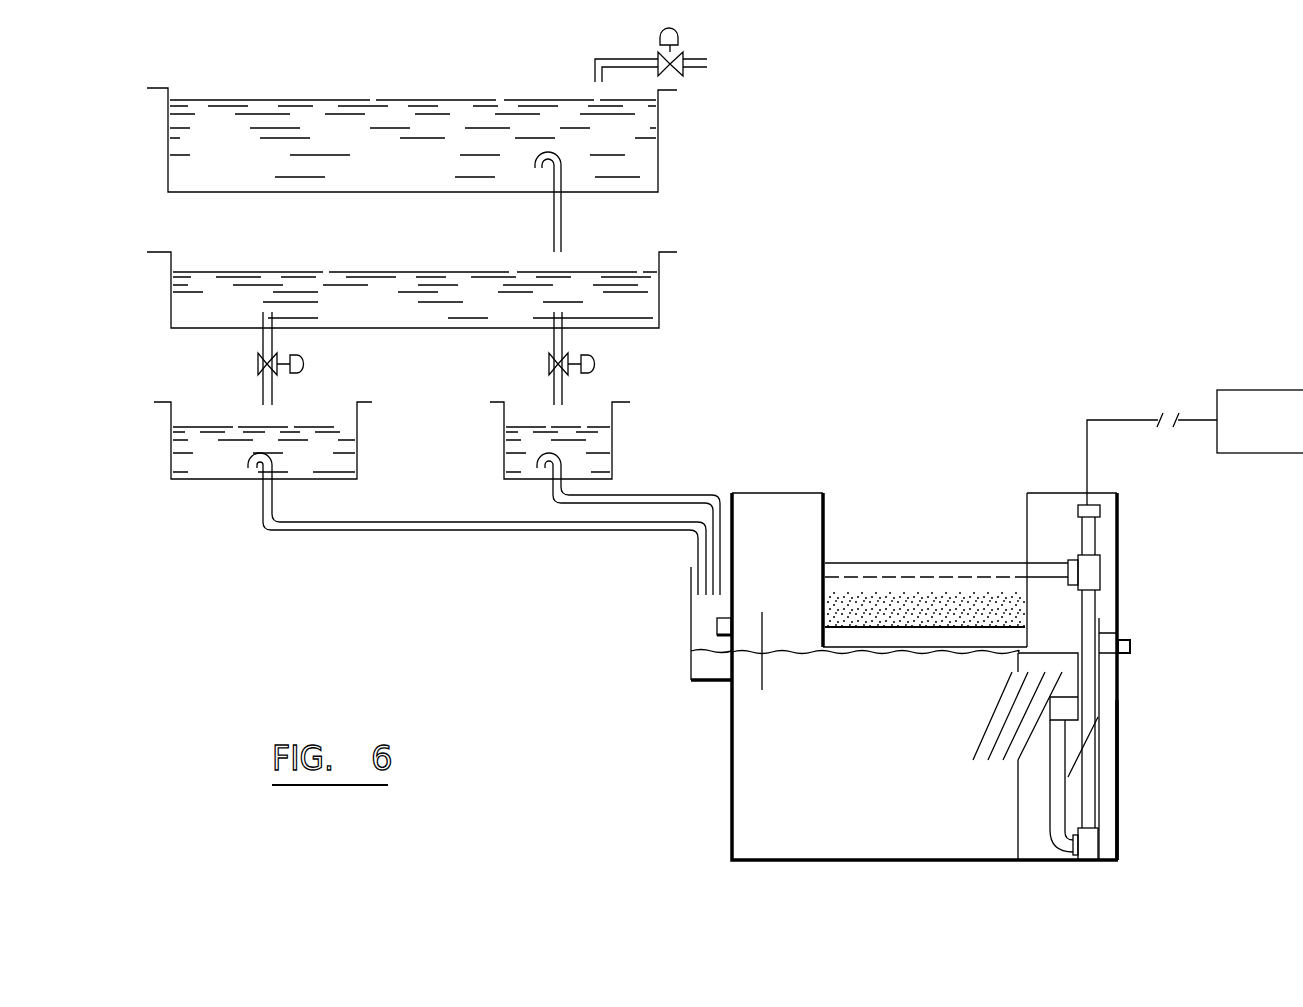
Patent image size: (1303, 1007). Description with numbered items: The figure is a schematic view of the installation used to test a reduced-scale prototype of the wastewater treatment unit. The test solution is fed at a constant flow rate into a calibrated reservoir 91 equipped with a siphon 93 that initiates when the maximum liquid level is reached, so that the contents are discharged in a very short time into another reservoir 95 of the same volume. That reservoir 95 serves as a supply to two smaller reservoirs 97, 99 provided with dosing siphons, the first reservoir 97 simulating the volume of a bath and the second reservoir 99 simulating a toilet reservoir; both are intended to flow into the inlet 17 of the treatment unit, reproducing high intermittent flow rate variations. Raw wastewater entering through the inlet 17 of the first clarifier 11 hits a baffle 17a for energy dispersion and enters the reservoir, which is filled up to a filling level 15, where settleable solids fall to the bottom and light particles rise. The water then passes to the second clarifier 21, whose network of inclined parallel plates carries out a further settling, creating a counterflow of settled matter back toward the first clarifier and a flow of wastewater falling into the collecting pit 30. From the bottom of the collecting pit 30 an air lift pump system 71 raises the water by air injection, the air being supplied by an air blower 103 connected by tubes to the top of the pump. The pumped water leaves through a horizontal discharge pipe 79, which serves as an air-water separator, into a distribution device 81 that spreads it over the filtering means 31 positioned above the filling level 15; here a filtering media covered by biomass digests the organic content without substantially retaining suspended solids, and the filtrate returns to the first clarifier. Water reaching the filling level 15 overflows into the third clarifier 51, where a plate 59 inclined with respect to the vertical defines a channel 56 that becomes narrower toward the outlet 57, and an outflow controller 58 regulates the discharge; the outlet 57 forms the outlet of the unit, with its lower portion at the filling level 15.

The first clarifier 11 is at (745, 791).
The filling level 15 is at (808, 653).
The inlet 17 is at (745, 638).
The baffle 17a is at (762, 620).
The second clarifier 21 is at (1000, 700).
The collecting pit 30 is at (1065, 682).
The filtering means 31 is at (865, 603).
The third clarifier 51 is at (1110, 800).
The channel 56 is at (1112, 712).
The outlet 57 is at (1131, 648).
The outflow controller 58 is at (1105, 634).
The plate 59 is at (1087, 748).
The air lift pump system 71 is at (1092, 605).
The horizontal discharge pipe 79 is at (989, 566).
The distribution device 81 is at (954, 575).
The calibrated reservoir 91 is at (658, 143).
The siphon 93 is at (563, 227).
The reservoir 95 is at (659, 303).
The first reservoir 97 is at (357, 450).
The second reservoir 99 is at (612, 450).
The air blower 103 is at (1195, 447).